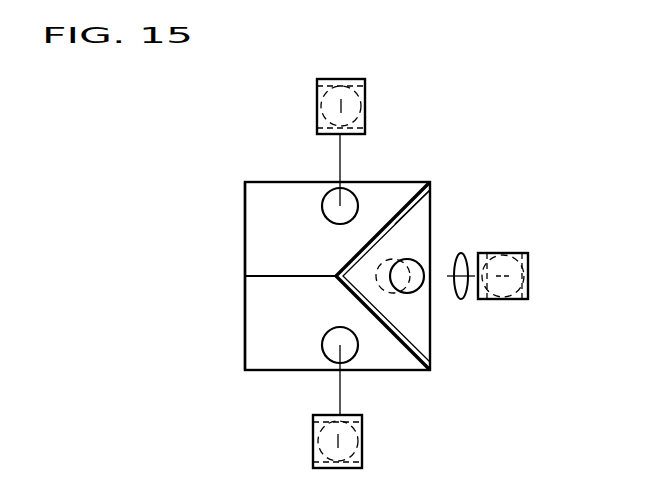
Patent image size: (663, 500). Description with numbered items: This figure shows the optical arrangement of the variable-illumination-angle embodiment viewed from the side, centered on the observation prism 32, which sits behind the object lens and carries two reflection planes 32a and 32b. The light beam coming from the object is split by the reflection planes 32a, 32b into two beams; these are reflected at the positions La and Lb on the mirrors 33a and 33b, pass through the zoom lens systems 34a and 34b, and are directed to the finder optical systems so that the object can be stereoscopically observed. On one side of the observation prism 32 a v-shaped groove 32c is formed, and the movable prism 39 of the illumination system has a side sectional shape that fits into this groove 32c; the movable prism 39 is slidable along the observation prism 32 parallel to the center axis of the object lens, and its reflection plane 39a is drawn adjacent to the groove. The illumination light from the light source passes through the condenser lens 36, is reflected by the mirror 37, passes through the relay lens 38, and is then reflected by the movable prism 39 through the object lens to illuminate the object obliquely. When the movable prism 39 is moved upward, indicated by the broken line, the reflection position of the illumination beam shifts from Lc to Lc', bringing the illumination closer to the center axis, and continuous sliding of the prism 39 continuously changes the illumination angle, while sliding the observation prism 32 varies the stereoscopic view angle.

The observation prism 32 is at (245, 200).
The reflection plane 32a is at (258, 243).
The reflection plane 32b is at (258, 338).
The v-shaped groove 32c is at (403, 207).
The mirror 33a is at (365, 80).
The zoom lens system 34a is at (353, 100).
The mirror 33b is at (362, 466).
The zoom lens system 34b is at (352, 440).
The condenser lens 36 is at (505, 298).
The mirror 37 is at (528, 287).
The relay lens 38 is at (463, 255).
The movable prism 39 is at (432, 190).
The reflecting film 39a is at (425, 213).
The reflection position La is at (328, 198).
The reflection position Lb is at (330, 356).
The reflection position of illumination light beam Lc is at (433, 295).
The reflection position of illumination light beam after movement Lc' is at (423, 314).